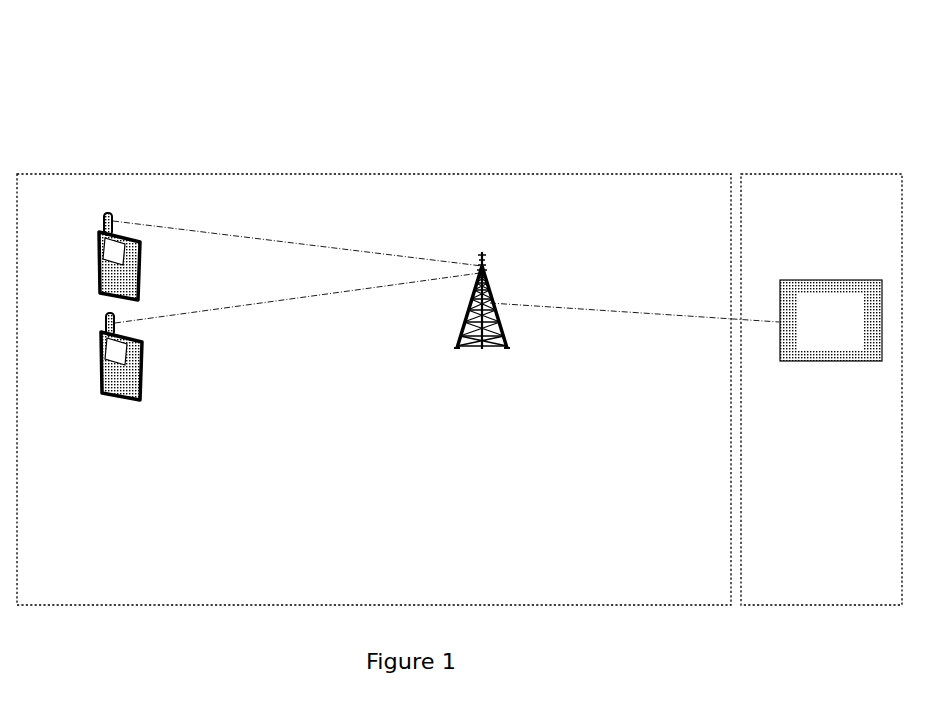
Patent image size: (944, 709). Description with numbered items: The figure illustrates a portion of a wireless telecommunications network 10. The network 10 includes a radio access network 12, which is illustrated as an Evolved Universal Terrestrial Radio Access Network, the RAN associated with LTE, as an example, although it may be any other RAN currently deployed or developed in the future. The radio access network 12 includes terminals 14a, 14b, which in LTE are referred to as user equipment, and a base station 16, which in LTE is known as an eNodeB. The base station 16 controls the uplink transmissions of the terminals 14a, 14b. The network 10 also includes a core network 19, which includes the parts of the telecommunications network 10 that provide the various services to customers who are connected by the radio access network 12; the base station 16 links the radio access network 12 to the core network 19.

The wireless telecommunications network 10 is at (471, 138).
The radio access network 12 is at (374, 389).
The terminal 14a is at (95, 262).
The terminal 14b is at (95, 372).
The base station 16 is at (494, 300).
The core network 19 is at (821, 389).